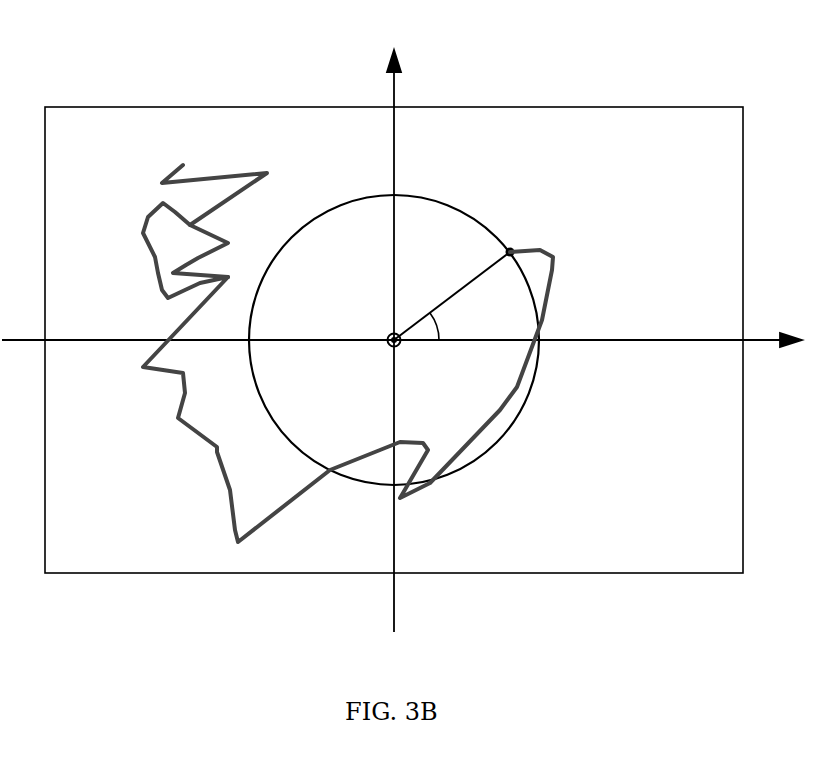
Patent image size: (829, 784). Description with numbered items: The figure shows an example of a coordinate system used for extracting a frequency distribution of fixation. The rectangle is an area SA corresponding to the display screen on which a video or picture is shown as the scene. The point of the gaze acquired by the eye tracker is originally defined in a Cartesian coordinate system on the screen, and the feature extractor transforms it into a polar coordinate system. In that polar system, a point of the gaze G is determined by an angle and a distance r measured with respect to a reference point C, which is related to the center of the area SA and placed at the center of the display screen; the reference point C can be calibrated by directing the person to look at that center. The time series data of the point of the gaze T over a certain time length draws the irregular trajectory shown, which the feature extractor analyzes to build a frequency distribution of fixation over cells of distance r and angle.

The area corresponding to the display screen SA is at (660, 107).
The time series data of the point of the gaze T is at (213, 443).
The point of the gaze G is at (510, 252).
The reference point C is at (384, 351).
The distance r is at (394, 340).